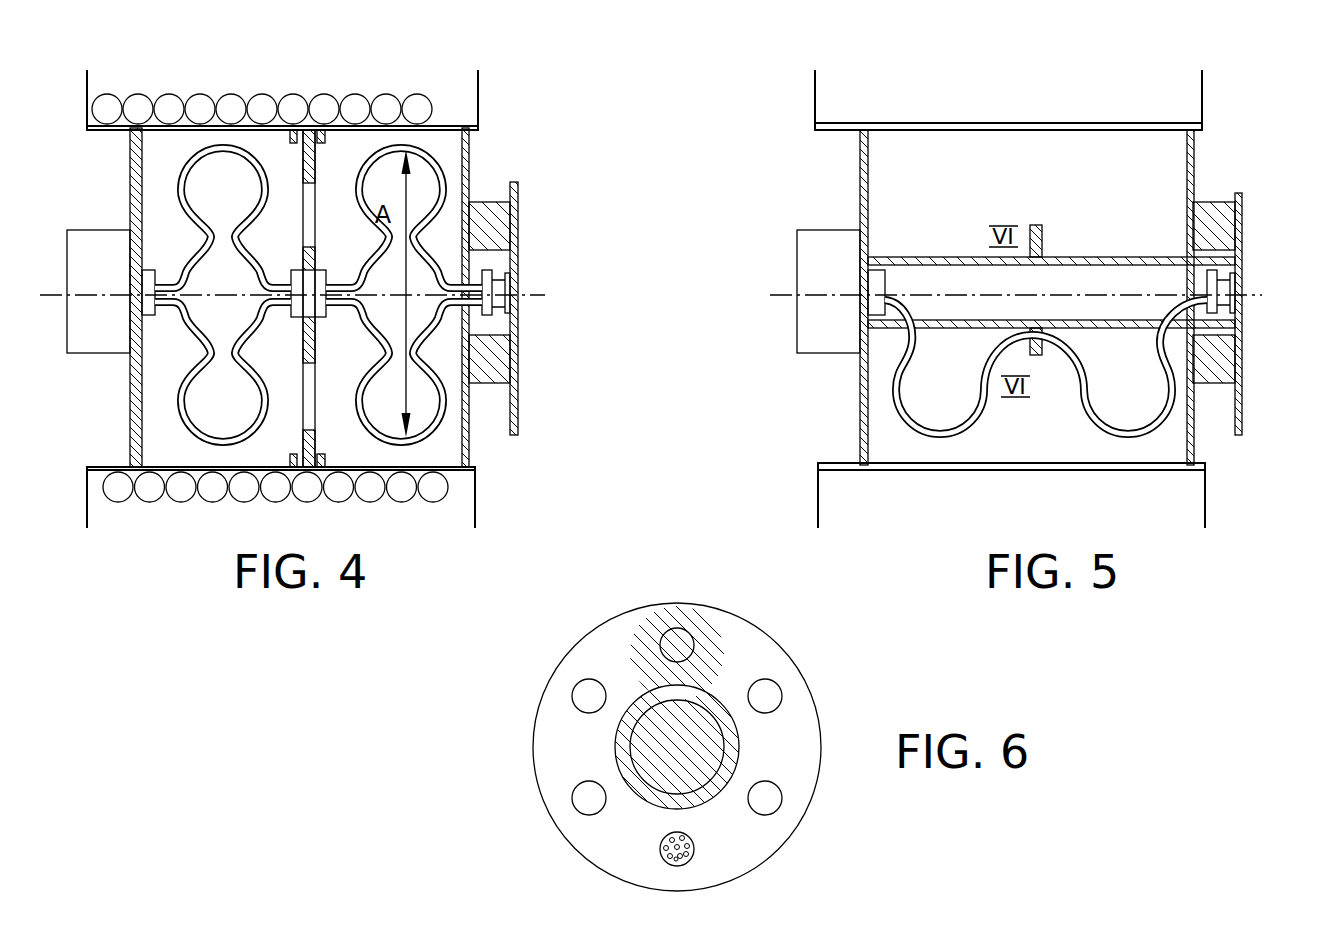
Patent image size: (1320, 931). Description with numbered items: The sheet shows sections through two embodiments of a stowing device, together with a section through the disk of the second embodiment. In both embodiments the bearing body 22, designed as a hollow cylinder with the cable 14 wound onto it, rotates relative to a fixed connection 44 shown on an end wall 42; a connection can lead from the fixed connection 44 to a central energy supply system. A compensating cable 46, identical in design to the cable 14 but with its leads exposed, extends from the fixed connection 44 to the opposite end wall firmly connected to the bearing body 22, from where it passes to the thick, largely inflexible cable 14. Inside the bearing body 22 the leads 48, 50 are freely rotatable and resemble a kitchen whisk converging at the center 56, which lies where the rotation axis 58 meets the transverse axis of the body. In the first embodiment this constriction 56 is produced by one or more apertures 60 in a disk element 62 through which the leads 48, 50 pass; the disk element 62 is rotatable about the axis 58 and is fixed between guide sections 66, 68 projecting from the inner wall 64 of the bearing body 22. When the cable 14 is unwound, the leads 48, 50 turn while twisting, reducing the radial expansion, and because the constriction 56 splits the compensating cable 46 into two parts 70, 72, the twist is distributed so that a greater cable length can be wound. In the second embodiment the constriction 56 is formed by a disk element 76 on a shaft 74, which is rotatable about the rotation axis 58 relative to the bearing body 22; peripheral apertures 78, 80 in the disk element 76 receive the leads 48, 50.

In FIG. 4, the cable 14 is at (388, 105).
In FIG. 4, the bearing body 22 is at (457, 122).
In FIG. 5, the bearing body 22 is at (970, 122).
In FIG. 4, the end wall 42 is at (470, 437).
In FIG. 4, the fixed connection 44 is at (503, 223).
In FIG. 5, the fixed connection 44 is at (1228, 213).
In FIG. 4, the compensating cable 46 is at (440, 165).
In FIG. 5, the compensating cable 46 is at (1142, 438).
In FIG. 4, the lead 48 is at (433, 430).
In FIG. 4, the lead 50 is at (444, 312).
In FIG. 4, the center 56 is at (330, 300).
In FIG. 5, the center 56 is at (1048, 340).
In FIG. 4, the rotation axis 58 is at (223, 300).
In FIG. 5, the rotation axis 58 is at (1123, 290).
In FIG. 4, the aperture 60 is at (293, 275).
In FIG. 4, the disk element 62 is at (308, 197).
In FIG. 4, the inner wall 64 is at (177, 456).
In FIG. 4, the guide section 66 is at (284, 458).
In FIG. 4, the guide section 68 is at (318, 128).
In FIG. 4, the part 70 is at (433, 142).
In FIG. 4, the part 72 is at (155, 147).
In FIG. 5, the shaft 74 is at (928, 257).
In FIG. 6, the shaft 74 is at (617, 747).
In FIG. 5, the disk element 76 is at (1036, 225).
In FIG. 6, the disk element 76 is at (758, 665).
In FIG. 6, the peripheral aperture 78 is at (775, 792).
In FIG. 6, the peripheral aperture 80 is at (578, 697).